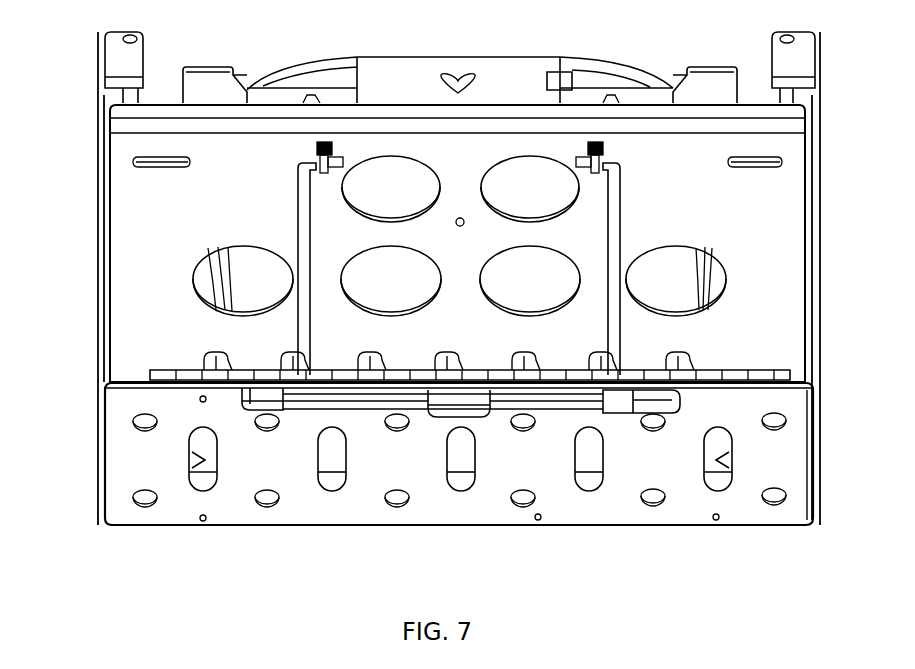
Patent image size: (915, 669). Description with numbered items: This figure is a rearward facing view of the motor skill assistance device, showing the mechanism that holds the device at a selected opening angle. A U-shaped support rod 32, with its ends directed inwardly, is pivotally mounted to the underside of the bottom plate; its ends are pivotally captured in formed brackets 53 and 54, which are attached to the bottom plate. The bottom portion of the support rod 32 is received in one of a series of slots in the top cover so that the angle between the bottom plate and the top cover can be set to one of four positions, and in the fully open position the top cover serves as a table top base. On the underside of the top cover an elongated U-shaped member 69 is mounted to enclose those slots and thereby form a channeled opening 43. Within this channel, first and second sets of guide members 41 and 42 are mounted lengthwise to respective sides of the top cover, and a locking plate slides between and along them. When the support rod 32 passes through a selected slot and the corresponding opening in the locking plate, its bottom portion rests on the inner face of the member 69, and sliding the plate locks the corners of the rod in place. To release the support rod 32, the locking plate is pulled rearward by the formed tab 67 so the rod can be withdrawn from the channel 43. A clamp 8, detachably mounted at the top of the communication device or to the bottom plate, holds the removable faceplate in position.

The clamp 8 is at (447, 63).
The support rod 32 is at (620, 223).
The first set of guide members 41 is at (285, 415).
The second set of guide members 42 is at (622, 413).
The channeled opening 43 is at (748, 402).
The formed bracket 53 is at (313, 155).
The formed bracket 54 is at (604, 154).
The formed tab 67 is at (458, 420).
The elongated U-shaped member 69 is at (377, 410).